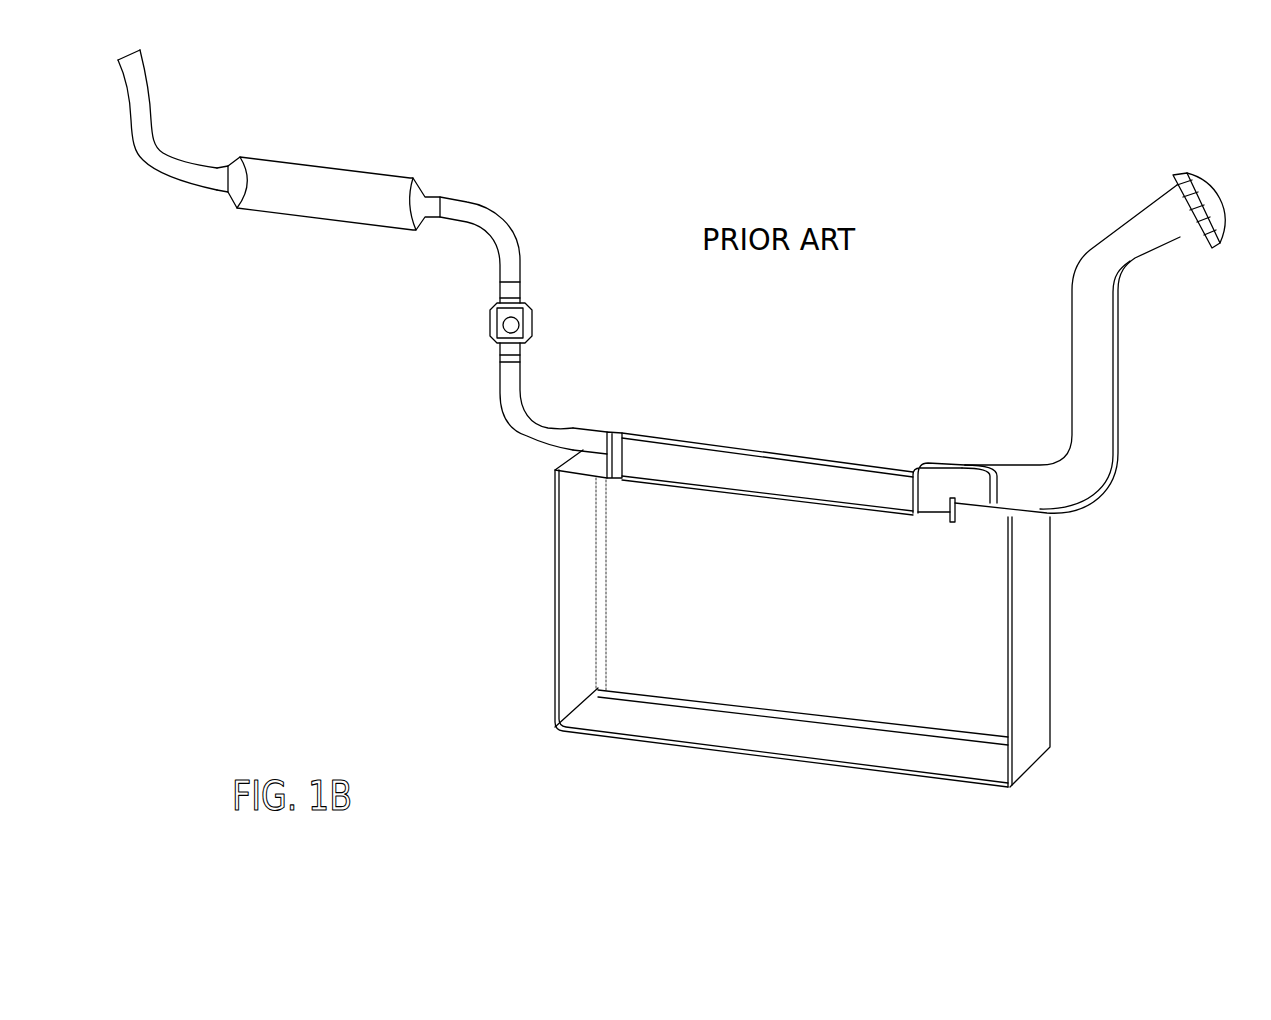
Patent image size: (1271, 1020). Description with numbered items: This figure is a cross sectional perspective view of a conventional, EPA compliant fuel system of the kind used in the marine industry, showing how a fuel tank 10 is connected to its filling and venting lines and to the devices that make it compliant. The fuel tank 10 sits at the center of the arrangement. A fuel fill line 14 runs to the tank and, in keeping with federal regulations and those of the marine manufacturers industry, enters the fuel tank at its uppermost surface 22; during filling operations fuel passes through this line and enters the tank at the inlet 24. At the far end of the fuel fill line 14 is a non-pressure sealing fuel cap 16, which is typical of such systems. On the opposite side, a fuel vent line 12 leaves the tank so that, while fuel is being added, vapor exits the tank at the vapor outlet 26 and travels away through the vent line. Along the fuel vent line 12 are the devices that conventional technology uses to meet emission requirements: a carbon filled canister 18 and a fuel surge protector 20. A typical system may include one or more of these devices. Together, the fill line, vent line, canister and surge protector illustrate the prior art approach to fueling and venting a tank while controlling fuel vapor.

The fuel tank 10 is at (790, 642).
The fuel vent line 12 is at (512, 410).
The fuel fill line 14 is at (1090, 370).
The fuel cap 16 is at (1210, 205).
The carbon filled canister 18 is at (330, 198).
The fuel surge protector 20 is at (490, 318).
The uppermost surface 22 is at (762, 470).
The inlet 24 is at (937, 518).
The vapor outlet 26 is at (614, 483).